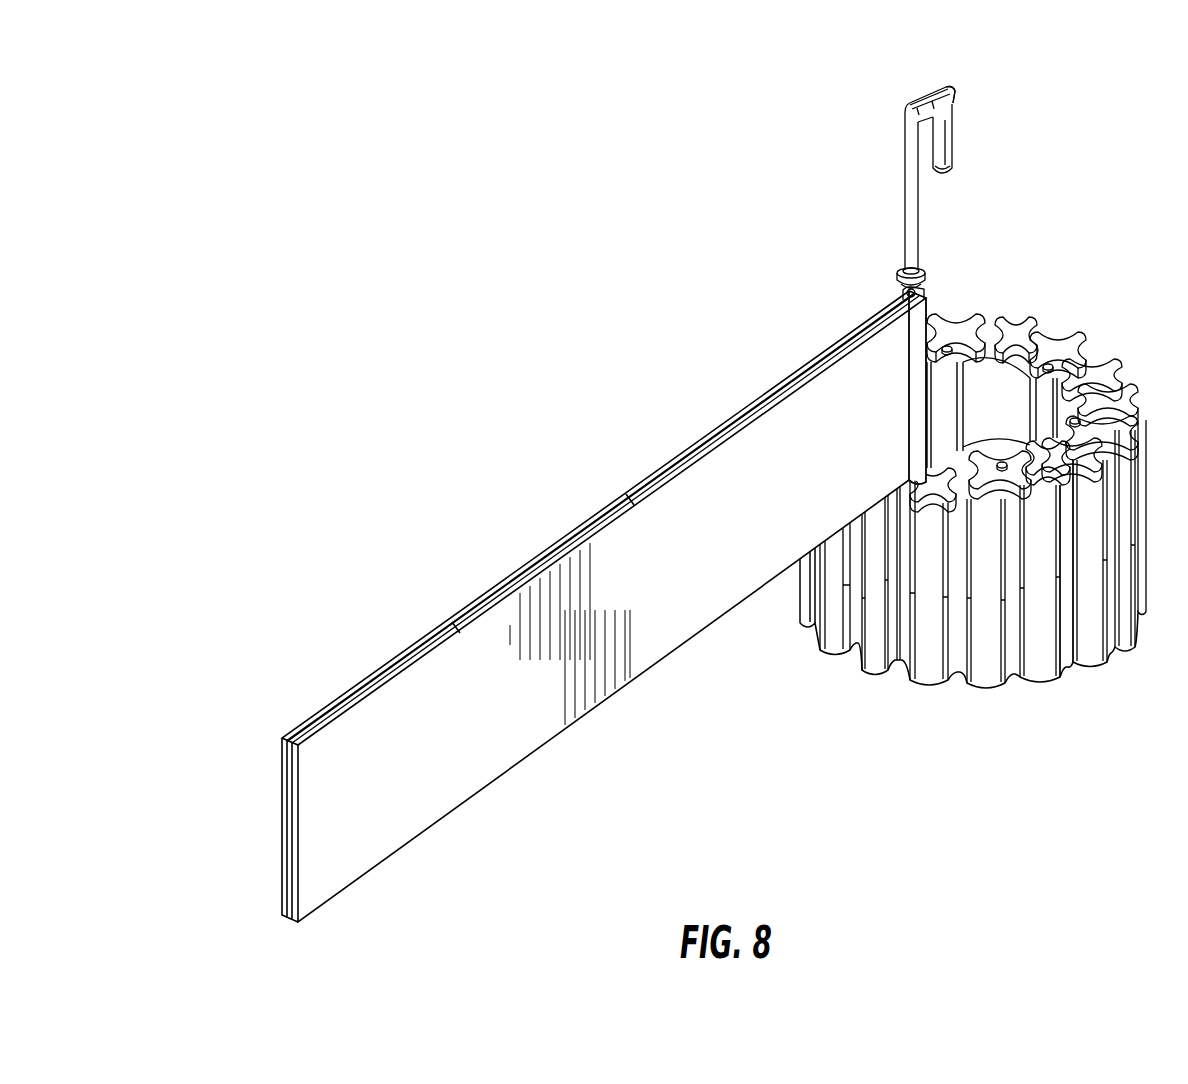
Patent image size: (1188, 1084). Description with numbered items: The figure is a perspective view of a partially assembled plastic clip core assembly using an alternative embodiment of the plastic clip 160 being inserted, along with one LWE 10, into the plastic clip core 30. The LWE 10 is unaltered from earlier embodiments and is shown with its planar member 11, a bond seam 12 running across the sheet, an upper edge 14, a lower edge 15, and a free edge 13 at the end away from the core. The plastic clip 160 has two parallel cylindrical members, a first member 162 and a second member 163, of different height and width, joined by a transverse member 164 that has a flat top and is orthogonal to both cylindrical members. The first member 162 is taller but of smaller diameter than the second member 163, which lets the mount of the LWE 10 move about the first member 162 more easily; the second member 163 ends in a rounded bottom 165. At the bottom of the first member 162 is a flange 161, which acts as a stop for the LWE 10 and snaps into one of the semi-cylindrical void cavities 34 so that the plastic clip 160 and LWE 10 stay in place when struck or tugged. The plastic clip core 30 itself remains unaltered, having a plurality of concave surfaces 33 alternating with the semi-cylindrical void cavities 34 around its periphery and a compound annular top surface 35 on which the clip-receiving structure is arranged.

The LWE 10 is at (574, 606).
The planar member 11 is at (452, 631).
The bond seam 12 is at (626, 497).
The free edge 13 is at (282, 806).
The upper edge 14 is at (375, 668).
The lower edge 15 is at (705, 630).
The plastic clip core 30 is at (989, 507).
The concave surfaces 33 is at (1097, 653).
The semi-cylindrical void cavities 34 is at (1018, 683).
The compound annular top surface 35 is at (1122, 382).
The plastic clip 160 is at (955, 147).
The flange 161 is at (900, 272).
The first member 162 is at (905, 215).
The second member 163 is at (957, 117).
The transverse member 164 is at (925, 96).
The rounded bottom 165 is at (950, 174).